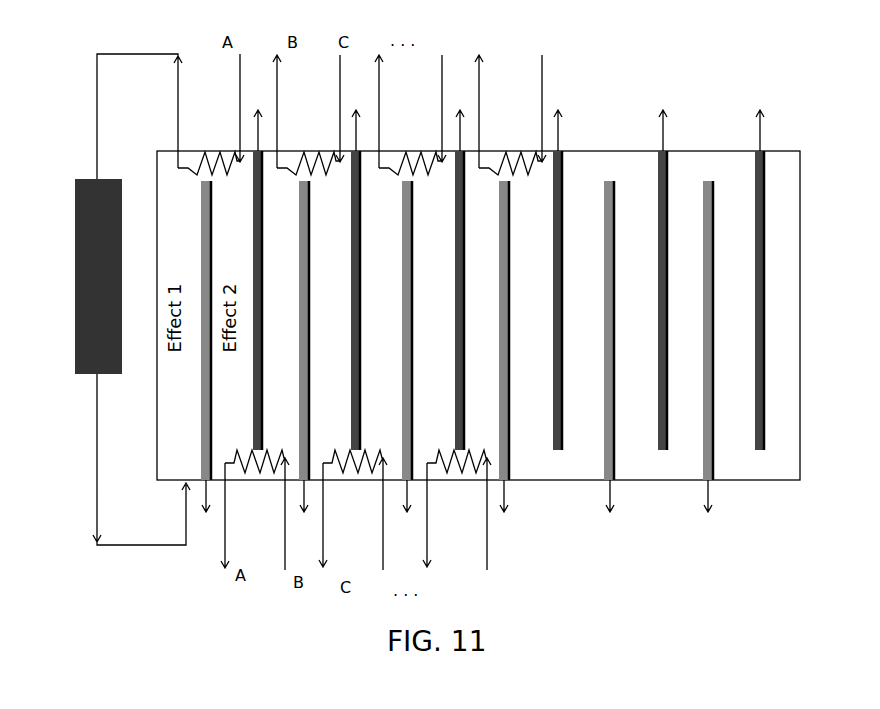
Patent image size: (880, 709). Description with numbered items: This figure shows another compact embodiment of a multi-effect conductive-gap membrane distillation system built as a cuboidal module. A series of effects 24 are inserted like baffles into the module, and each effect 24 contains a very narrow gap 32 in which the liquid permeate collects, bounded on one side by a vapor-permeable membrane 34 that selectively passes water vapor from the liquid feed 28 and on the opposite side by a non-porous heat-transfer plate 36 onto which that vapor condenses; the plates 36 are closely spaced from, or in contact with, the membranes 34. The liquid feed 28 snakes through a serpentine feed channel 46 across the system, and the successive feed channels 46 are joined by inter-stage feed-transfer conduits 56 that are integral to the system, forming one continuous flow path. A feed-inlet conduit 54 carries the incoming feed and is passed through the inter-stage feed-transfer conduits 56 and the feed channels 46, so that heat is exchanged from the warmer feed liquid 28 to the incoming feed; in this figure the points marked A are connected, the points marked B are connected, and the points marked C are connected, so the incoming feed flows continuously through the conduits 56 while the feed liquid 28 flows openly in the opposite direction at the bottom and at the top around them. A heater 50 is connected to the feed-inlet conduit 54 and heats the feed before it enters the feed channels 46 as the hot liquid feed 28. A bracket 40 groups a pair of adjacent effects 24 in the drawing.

The effect 24 is at (288, 486).
The liquid feed 28 is at (793, 408).
The gap 32 is at (562, 288).
The vapor-permeable membrane 34 is at (352, 232).
The heat-transfer plate 36 is at (403, 268).
The pair of effects 40 is at (612, 497).
The feed channel 46 is at (791, 303).
The heater 50 is at (88, 232).
The feed-inlet conduit 54 is at (487, 547).
The inter-stage feed-transfer conduit 56 is at (757, 462).